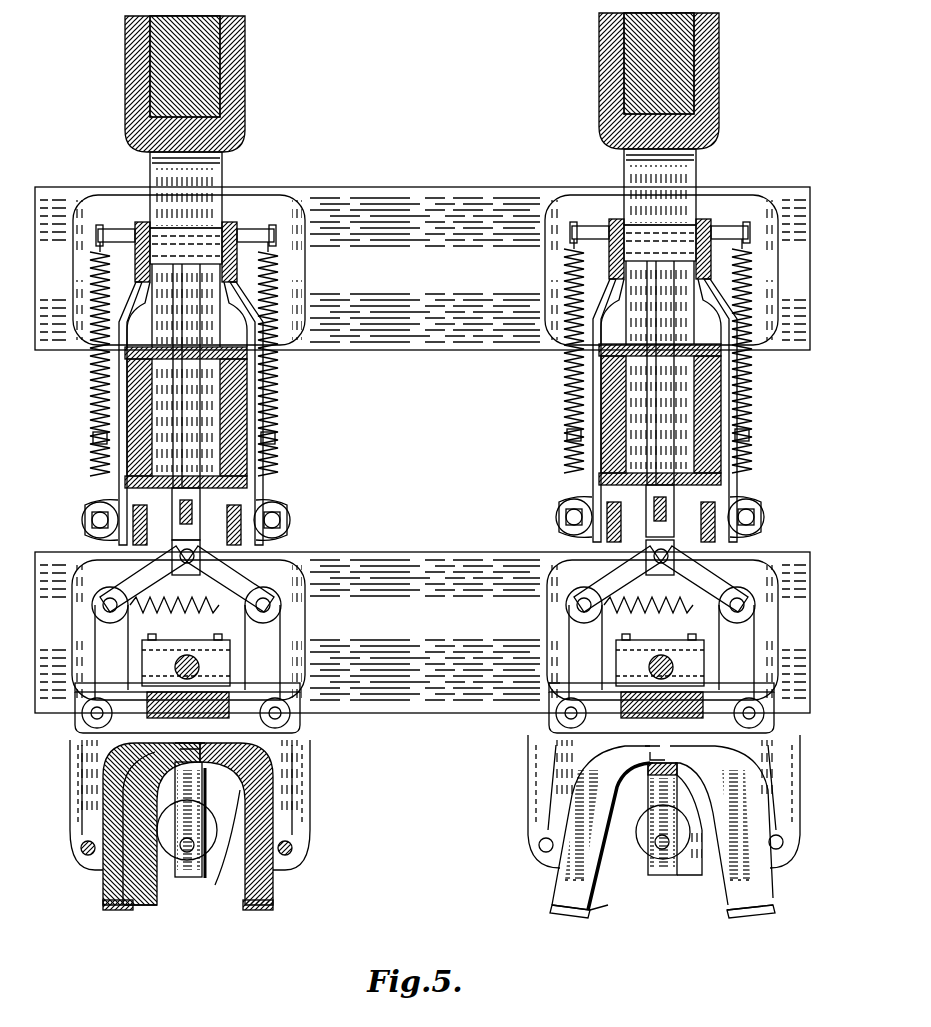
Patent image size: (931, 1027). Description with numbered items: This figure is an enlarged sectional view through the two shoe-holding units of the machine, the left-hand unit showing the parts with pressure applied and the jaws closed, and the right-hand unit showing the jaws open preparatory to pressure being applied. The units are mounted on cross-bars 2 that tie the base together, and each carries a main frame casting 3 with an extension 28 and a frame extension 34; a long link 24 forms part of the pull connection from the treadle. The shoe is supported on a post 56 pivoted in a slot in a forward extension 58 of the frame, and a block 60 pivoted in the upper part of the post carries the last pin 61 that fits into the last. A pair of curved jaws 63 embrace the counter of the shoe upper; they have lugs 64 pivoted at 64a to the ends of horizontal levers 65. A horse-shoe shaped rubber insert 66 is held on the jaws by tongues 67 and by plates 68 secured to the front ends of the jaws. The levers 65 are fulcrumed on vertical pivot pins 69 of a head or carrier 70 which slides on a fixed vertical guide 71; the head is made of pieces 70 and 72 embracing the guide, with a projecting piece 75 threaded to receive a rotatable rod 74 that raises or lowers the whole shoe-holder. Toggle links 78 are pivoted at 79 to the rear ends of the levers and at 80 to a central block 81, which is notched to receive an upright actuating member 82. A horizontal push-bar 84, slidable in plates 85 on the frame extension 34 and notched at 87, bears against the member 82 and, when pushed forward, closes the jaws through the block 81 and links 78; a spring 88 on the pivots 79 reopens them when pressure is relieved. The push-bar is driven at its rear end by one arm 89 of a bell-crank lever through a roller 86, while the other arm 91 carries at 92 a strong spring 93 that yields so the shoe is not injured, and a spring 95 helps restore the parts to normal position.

The cross-bars 2 is at (413, 188).
The main frame casting 3 is at (130, 140).
The long link 24 is at (235, 490).
The extension 28 is at (150, 60).
The frame extension 34 is at (262, 435).
The post 56 is at (212, 858).
The forward extension 58 is at (700, 862).
The block 60 is at (188, 872).
The last pin 61 is at (186, 848).
The curved jaws 63 is at (274, 792).
The lugs 64 is at (73, 850).
The pivots 64a is at (86, 850).
The horizontal levers 65 is at (76, 745).
The rubber insert 66 is at (127, 900).
The tongues 67 is at (232, 745).
The plates 68 is at (125, 905).
The vertical pivot pins 69 is at (280, 712).
The head or carrier 70 is at (230, 702).
The vertical guide 71 is at (225, 690).
The head piece 72 is at (548, 684).
The rotatable rod 74 is at (185, 667).
The head projection 75 is at (230, 650).
The toggle links 78 is at (215, 580).
The pivots 79 is at (268, 604).
The pivot 80 is at (181, 556).
The central block 81 is at (268, 527).
The actuating member 82 is at (178, 528).
The push-bar 84 is at (186, 405).
The plates 85 is at (220, 348).
The roller 86 is at (200, 232).
The notch 87 is at (168, 482).
The spring 88 is at (152, 614).
The bell-crank arm 89 is at (138, 222).
The bell-crank arm 91 is at (250, 290).
The spring attachment 92 is at (90, 522).
The strong spring 93 is at (272, 508).
The spring 95 is at (92, 362).